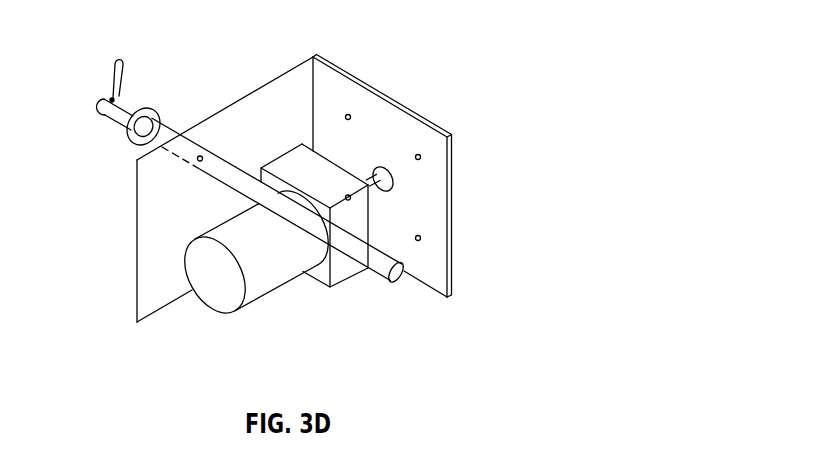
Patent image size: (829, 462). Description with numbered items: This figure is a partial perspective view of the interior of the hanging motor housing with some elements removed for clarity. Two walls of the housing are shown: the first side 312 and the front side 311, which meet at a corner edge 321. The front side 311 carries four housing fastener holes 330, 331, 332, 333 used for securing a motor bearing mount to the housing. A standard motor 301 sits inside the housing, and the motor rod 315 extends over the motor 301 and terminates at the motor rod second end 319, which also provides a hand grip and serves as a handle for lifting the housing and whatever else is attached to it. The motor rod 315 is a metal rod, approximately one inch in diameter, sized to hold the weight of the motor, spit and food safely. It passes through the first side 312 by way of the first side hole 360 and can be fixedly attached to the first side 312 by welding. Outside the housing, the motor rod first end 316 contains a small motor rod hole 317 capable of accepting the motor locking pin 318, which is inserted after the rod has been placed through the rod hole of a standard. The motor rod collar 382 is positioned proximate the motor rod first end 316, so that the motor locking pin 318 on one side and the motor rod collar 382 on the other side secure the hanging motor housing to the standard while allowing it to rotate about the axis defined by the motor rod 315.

The motor 301 is at (288, 173).
The front side 311 is at (350, 78).
The first side 312 is at (148, 278).
The motor rod 315 is at (114, 126).
The motor rod first end 316 is at (100, 107).
The motor rod hole 317 is at (112, 98).
The motor locking pin 318 is at (118, 54).
The motor rod second end 319 is at (350, 263).
The plate corner edge 321 is at (313, 110).
The housing fastener hole 330 is at (348, 195).
The housing fastener hole 331 is at (349, 114).
The housing fastener hole 332 is at (418, 154).
The housing fastener hole 333 is at (416, 238).
The first side hole 360 is at (198, 161).
The motor rod collar 382 is at (133, 150).